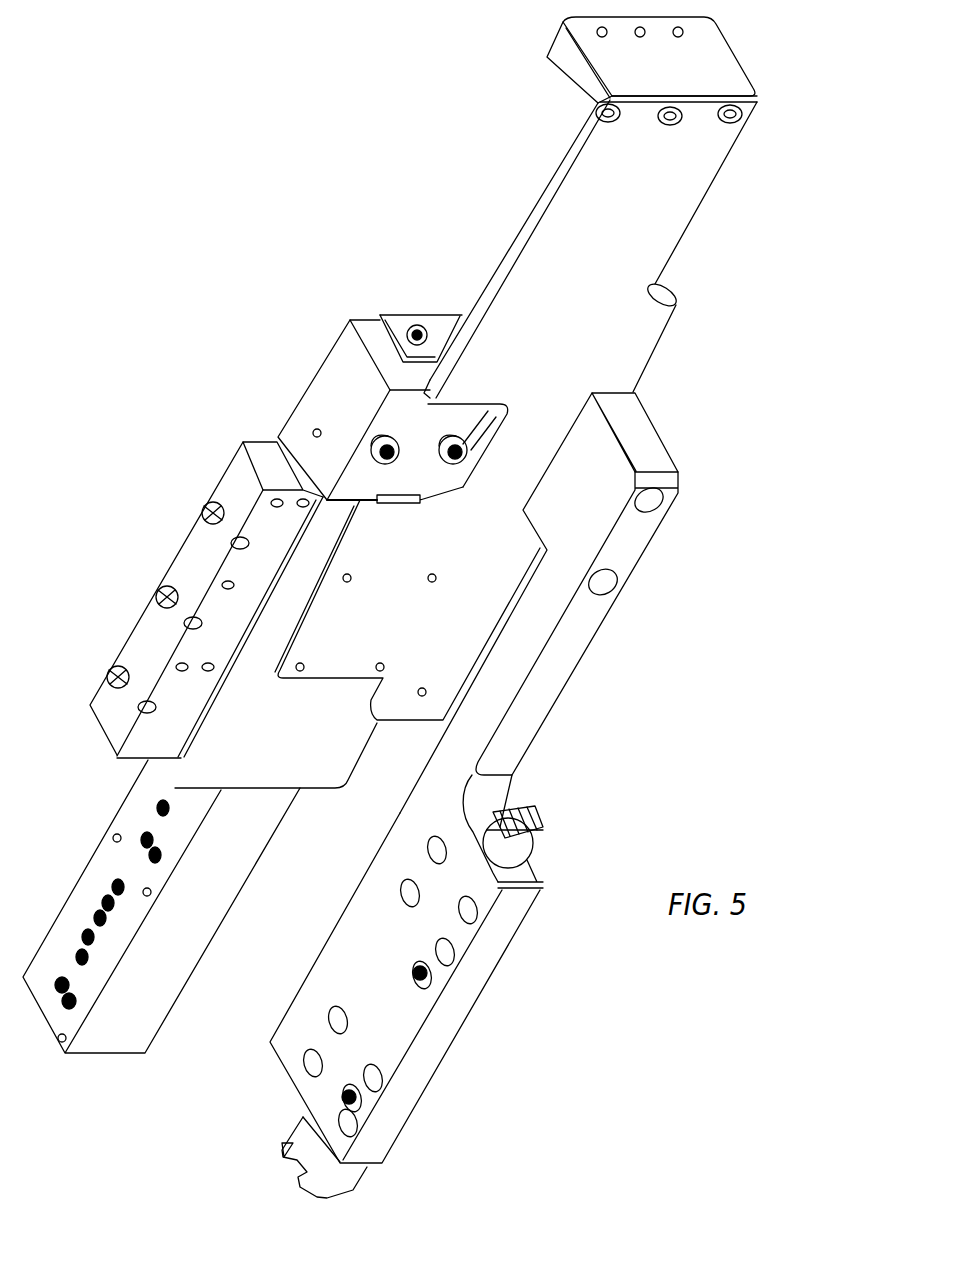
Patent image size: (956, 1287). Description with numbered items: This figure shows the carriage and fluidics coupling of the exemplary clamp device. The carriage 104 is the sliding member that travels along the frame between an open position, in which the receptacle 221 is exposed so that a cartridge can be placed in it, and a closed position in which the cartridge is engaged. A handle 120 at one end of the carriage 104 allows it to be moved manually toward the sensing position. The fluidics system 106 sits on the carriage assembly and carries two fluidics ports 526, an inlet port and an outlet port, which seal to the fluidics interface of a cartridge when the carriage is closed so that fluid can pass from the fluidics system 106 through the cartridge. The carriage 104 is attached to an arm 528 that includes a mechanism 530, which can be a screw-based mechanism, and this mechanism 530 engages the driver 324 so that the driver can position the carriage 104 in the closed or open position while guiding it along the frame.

The carriage 104 is at (668, 202).
The fluidics system 106 is at (332, 390).
The handle 120 is at (700, 70).
The receptacle 221 is at (483, 404).
The driver 324 is at (328, 1180).
The fluidics ports 526 is at (455, 447).
The arm 528 is at (633, 538).
The mechanism 530 is at (452, 1025).